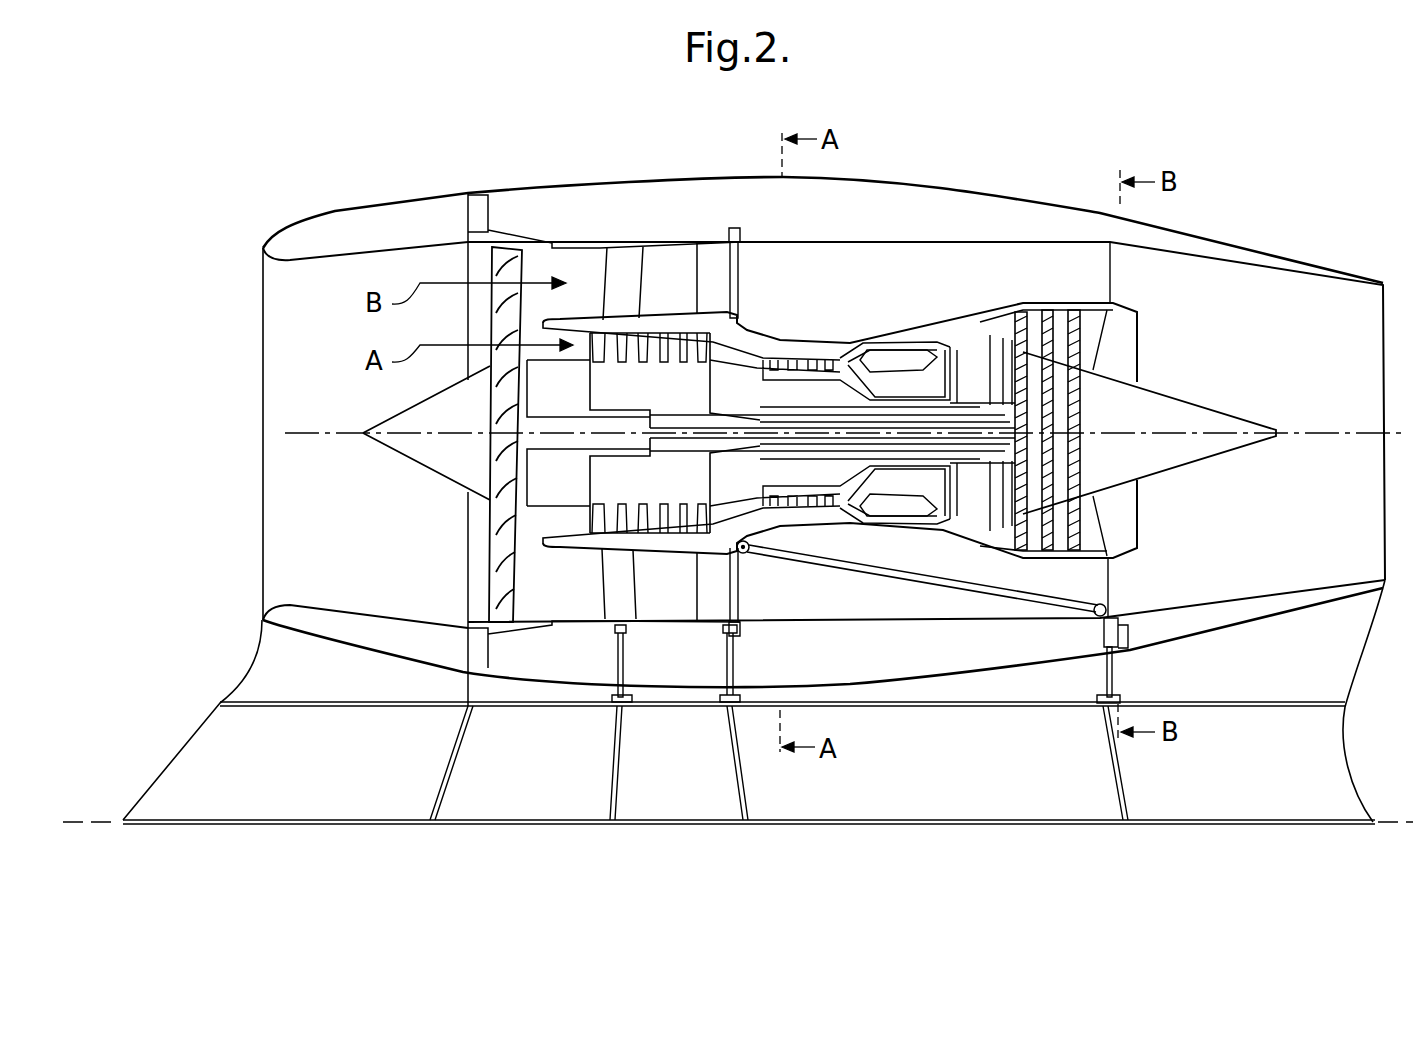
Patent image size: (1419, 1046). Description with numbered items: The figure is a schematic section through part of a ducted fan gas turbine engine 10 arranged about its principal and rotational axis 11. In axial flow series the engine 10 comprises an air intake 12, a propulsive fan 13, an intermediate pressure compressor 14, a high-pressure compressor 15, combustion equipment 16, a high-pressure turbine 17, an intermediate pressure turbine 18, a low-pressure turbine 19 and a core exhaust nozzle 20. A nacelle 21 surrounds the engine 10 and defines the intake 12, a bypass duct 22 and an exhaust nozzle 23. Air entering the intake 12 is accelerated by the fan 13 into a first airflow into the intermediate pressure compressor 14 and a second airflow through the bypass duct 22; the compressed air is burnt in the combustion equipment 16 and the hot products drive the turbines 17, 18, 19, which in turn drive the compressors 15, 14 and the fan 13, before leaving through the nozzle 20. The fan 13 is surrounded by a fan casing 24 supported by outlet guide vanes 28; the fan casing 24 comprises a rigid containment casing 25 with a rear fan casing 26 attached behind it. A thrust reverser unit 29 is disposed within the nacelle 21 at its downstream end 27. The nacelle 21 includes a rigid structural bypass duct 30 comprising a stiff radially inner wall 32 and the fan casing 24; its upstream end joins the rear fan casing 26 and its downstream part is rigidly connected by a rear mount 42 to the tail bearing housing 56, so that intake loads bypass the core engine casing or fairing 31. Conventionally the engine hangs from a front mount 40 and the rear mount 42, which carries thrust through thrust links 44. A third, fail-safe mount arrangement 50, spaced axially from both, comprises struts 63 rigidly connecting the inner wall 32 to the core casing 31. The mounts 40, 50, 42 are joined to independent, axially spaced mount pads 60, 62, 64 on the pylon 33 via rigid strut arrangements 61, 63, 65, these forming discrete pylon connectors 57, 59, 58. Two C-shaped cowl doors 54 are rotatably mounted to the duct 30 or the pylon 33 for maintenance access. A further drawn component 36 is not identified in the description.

The ducted fan gas turbine engine 10 is at (169, 156).
The principal and rotational axis 11 is at (300, 434).
The air intake 12 is at (307, 603).
The propulsive fan 13 is at (485, 545).
The intermediate pressure compressor 14 is at (665, 492).
The high-pressure compressor 15 is at (797, 363).
The combustion equipment 16 is at (910, 353).
The high-pressure turbine 17 is at (943, 352).
The intermediate pressure turbine 18 is at (998, 335).
The low-pressure turbine 19 is at (1047, 312).
The core exhaust nozzle 20 is at (1130, 304).
The nacelle 21 is at (337, 211).
The bypass duct 22 is at (893, 306).
The exhaust nozzle 23 is at (1357, 270).
The fan casing 24 is at (575, 243).
The rigid containment casing 25 is at (500, 237).
The rear fan casing 26 is at (643, 238).
The downstream end of the nacelle 27 is at (1258, 257).
The outlet guide vanes 28 is at (617, 278).
The thrust reverser unit 29 is at (1195, 243).
The structural bypass duct (SBPD) 30 is at (880, 182).
The core engine casing or fairing 31 is at (837, 350).
The radially inner wall of the structural bypass duct 32 is at (946, 240).
The pylon 33 is at (212, 745).
The strut 36 is at (740, 271).
The front mount 40 is at (607, 638).
The rear mount 42 is at (1118, 607).
The thrust links 44 is at (890, 577).
The fail-safe mount arrangement 50 is at (723, 635).
The C-shaped cowl doors 54 is at (738, 178).
The tail bearing housing 56 is at (1123, 347).
The pylon connector 57 is at (616, 697).
The pylon connector 58 is at (1128, 698).
The pylon connector 59 is at (748, 697).
The mount pad 60 is at (618, 705).
The rigid strut arrangement 61 is at (626, 649).
The mount pad 62 is at (727, 705).
The struts 63 is at (736, 651).
The mount pad 64 is at (1098, 699).
The rigid strut arrangement 65 is at (1114, 672).